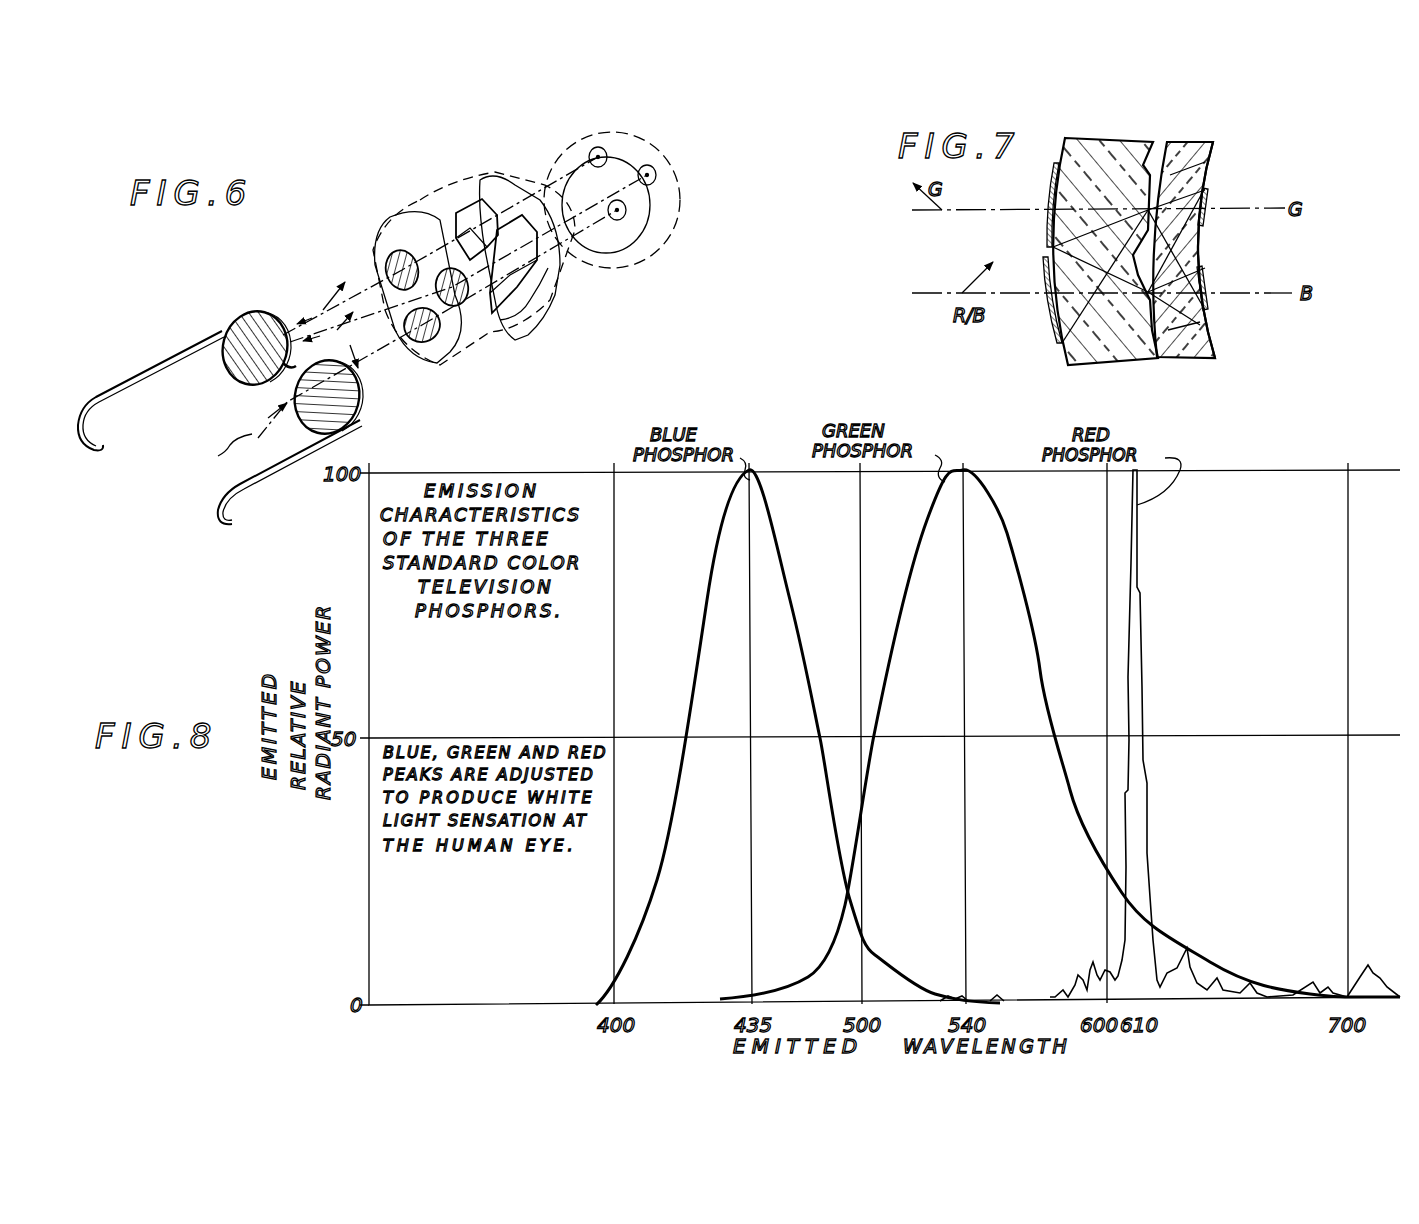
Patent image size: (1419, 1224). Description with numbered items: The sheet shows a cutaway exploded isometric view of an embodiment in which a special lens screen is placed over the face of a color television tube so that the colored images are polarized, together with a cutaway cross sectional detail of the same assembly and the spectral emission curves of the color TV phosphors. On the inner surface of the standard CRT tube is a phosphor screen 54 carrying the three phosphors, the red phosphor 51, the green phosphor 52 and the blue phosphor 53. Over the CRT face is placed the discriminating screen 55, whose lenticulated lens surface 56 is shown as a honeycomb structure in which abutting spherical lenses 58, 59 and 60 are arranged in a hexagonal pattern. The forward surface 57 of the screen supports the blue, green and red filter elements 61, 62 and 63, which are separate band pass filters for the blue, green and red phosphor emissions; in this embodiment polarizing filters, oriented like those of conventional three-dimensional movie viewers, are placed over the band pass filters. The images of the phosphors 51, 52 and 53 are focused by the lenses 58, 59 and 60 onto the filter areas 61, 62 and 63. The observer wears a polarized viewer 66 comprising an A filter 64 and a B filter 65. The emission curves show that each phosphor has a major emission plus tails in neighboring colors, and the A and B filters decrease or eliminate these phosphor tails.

In FIG. 6, the red phosphor 51 is at (608, 156).
In FIG. 6, the green phosphor 52 is at (658, 177).
In FIG. 7, the green phosphor 52 is at (1204, 220).
In FIG. 6, the blue phosphor 53 is at (628, 214).
In FIG. 7, the blue phosphor 53 is at (1206, 275).
In FIG. 6, the phosphor screen 54 is at (672, 240).
In FIG. 7, the phosphor screen 54 is at (1217, 357).
In FIG. 6, the discriminating screen 55 is at (420, 198).
In FIG. 7, the discriminating screen 55 is at (1081, 270).
In FIG. 6, the lenticulated lens surface 56 is at (522, 206).
In FIG. 7, the lenticulated lens surface 56 is at (1182, 358).
In FIG. 6, the forward surface 57 is at (393, 233).
In FIG. 7, the forward surface 57 is at (1062, 357).
In FIG. 6, the spherical lens 58 is at (497, 198).
In FIG. 6, the spherical lens 59 is at (565, 283).
In FIG. 7, the spherical lens 59 is at (1200, 168).
In FIG. 6, the spherical lens 60 is at (540, 320).
In FIG. 7, the spherical lens 60 is at (1197, 323).
In FIG. 6, the blue filter element 61 is at (382, 266).
In FIG. 6, the green filter element 62 is at (475, 350).
In FIG. 7, the green filter element 62 is at (1043, 227).
In FIG. 6, the red filter element 63 is at (442, 365).
In FIG. 7, the red filter element 63 is at (1053, 300).
In FIG. 6, the A filter 64 is at (358, 396).
In FIG. 6, the B filter 65 is at (266, 318).
In FIG. 6, the viewer 66 is at (283, 392).